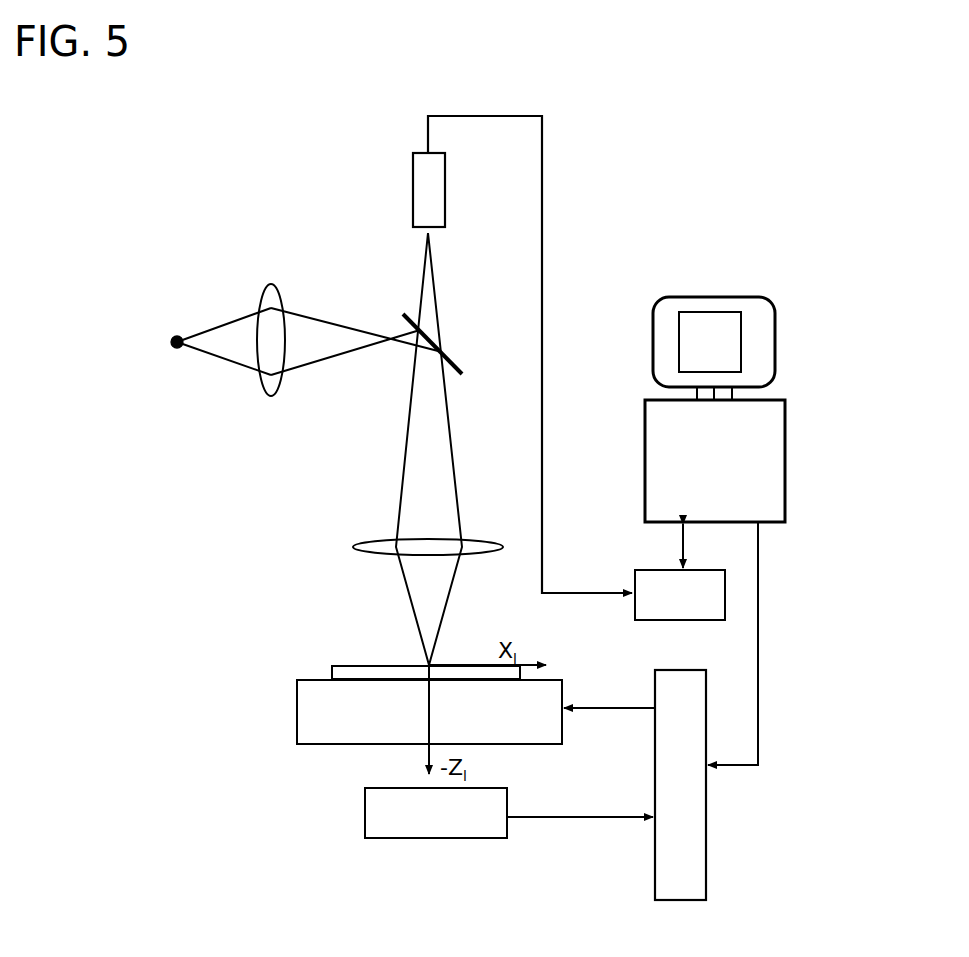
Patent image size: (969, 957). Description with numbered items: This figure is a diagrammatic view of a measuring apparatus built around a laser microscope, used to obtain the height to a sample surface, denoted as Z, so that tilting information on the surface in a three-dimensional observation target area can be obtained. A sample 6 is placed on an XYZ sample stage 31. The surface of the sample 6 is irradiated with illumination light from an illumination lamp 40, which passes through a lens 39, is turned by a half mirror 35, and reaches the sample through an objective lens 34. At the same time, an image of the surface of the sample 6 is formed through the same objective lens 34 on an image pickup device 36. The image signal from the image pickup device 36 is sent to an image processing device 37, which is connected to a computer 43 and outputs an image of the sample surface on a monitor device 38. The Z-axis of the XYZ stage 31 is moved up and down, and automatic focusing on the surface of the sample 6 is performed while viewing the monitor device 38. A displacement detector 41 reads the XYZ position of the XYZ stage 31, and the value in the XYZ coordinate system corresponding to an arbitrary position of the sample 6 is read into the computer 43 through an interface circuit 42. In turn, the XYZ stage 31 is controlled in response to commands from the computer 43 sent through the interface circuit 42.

The sample 6 is at (332, 672).
The XYZ sample stage 31 is at (297, 711).
The objective lens 34 is at (354, 547).
The half mirror 35 is at (402, 314).
The image pickup device 36 is at (413, 178).
The image processing device 37 is at (635, 608).
The monitor device 38 is at (775, 340).
The lens 39 is at (272, 284).
The illumination lamp 40 is at (177, 336).
The displacement detector 41 is at (365, 815).
The interface circuit 42 is at (706, 848).
The computer 43 is at (785, 462).